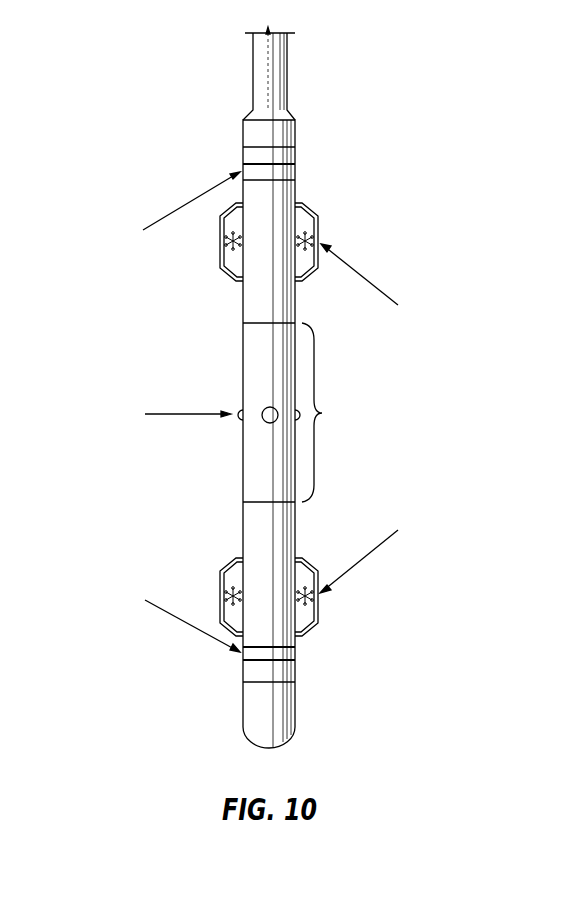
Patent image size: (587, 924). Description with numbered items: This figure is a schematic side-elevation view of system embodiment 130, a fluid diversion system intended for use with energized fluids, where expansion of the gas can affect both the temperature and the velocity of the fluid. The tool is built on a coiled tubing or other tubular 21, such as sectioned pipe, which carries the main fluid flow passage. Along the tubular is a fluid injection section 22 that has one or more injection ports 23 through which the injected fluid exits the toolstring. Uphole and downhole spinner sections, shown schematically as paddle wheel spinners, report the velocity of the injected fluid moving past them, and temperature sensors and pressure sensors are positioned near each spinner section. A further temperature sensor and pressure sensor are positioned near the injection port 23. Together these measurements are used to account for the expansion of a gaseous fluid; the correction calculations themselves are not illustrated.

The system embodiment 130 is at (267, 387).
The tubular 21 is at (262, 88).
The fluid injection section 22 is at (323, 413).
The injection ports 23 is at (294, 419).